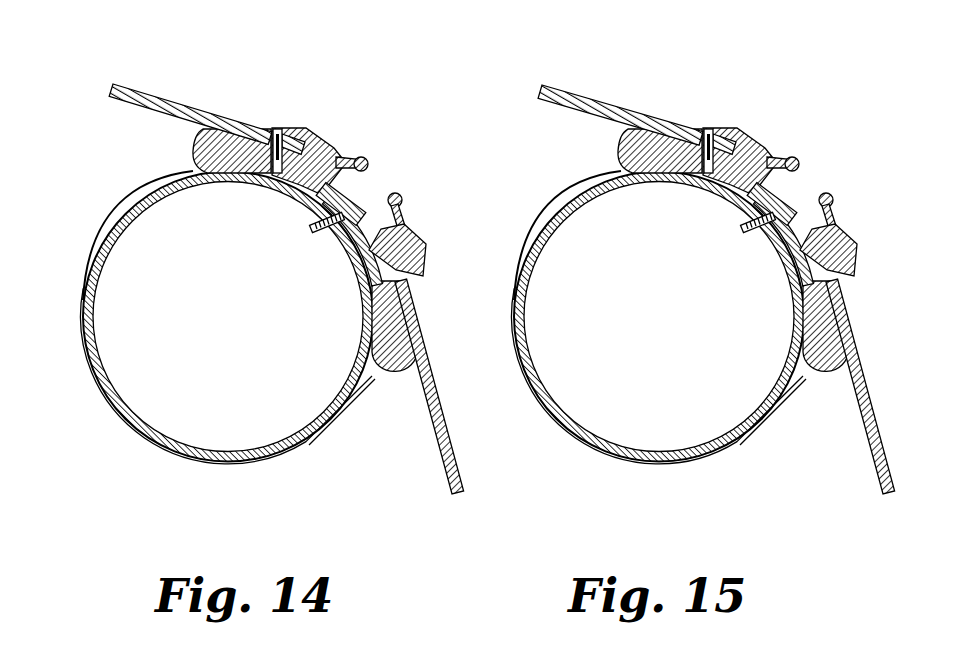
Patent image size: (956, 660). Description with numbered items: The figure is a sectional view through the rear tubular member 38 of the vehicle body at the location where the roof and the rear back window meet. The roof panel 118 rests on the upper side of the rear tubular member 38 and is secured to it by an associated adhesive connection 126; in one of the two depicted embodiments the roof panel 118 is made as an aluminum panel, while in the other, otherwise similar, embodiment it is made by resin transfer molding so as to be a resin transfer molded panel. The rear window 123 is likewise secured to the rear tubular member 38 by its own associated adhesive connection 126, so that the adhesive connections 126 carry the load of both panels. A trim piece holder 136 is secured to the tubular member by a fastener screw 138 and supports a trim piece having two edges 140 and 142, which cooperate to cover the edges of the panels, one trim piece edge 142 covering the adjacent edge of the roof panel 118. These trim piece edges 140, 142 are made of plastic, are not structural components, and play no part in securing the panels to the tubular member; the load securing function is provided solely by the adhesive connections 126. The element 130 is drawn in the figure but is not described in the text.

In FIG. 14, the rear tubular member 38 is at (107, 398).
In FIG. 15, the rear tubular member 38 is at (639, 317).
In FIG. 14, the roof panel 118 is at (176, 100).
In FIG. 15, the roof panel 118 is at (620, 84).
In FIG. 14, the rear window 123 is at (460, 468).
In FIG. 15, the rear window 123 is at (891, 386).
In FIG. 14, the adhesive connection 126 is at (178, 151).
In FIG. 15, the adhesive connection 126 is at (670, 328).
In FIG. 14, the clamp block 130 is at (198, 161).
In FIG. 15, the clamp block 130 is at (669, 307).
In FIG. 14, the trim piece holder 136 is at (362, 156).
In FIG. 15, the trim piece holder 136 is at (789, 123).
In FIG. 14, the fastener screw 138 is at (352, 204).
In FIG. 15, the fastener screw 138 is at (802, 194).
In FIG. 14, the trim piece edge 140 is at (428, 258).
In FIG. 15, the trim piece edge 140 is at (853, 224).
In FIG. 14, the trim piece edge 142 is at (300, 130).
In FIG. 15, the trim piece edge 142 is at (735, 124).